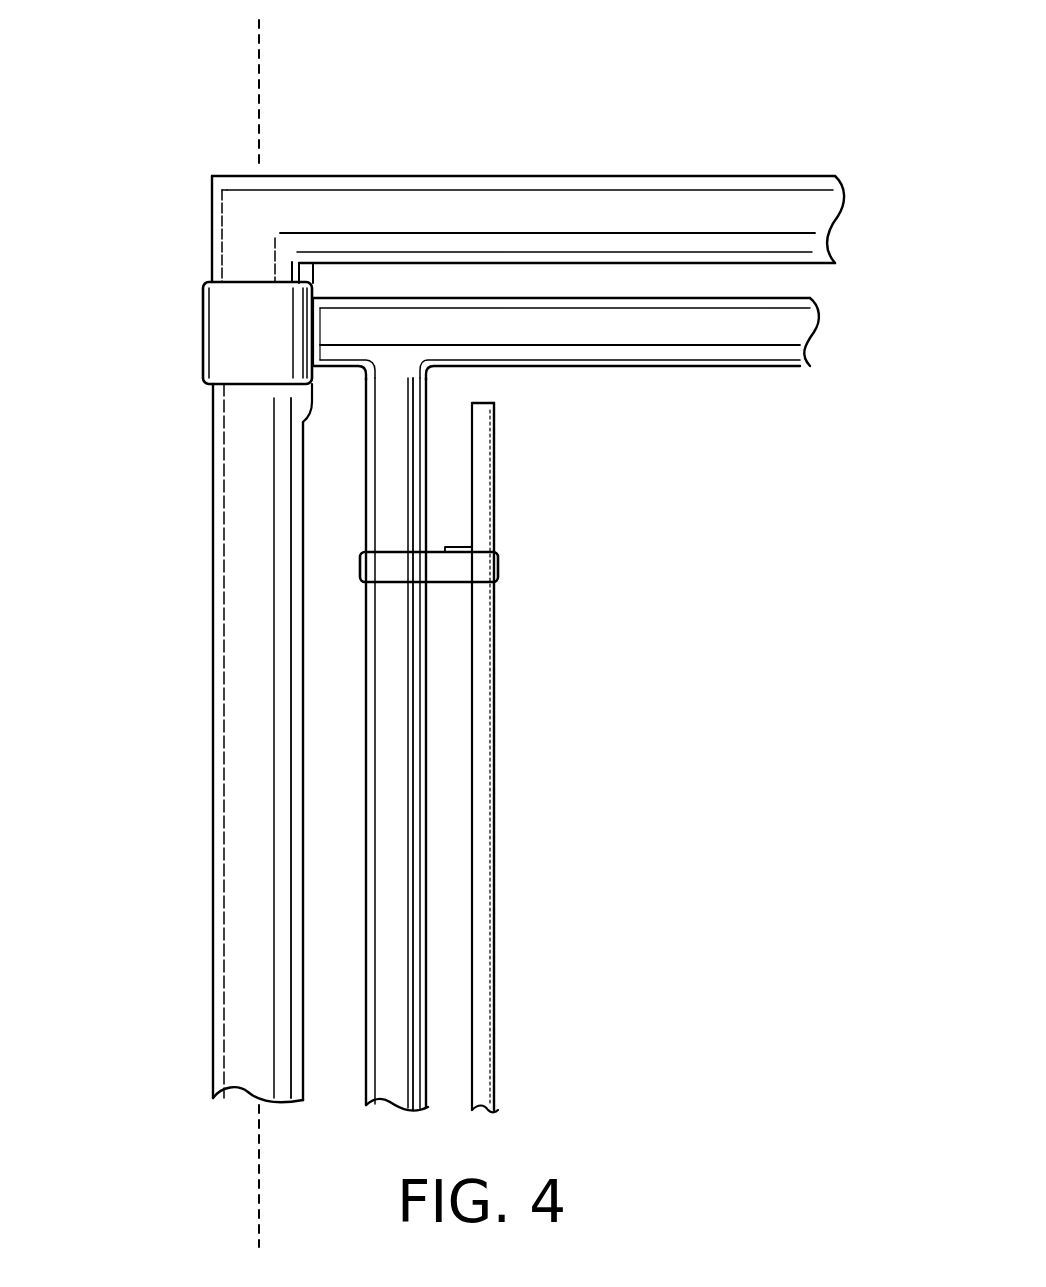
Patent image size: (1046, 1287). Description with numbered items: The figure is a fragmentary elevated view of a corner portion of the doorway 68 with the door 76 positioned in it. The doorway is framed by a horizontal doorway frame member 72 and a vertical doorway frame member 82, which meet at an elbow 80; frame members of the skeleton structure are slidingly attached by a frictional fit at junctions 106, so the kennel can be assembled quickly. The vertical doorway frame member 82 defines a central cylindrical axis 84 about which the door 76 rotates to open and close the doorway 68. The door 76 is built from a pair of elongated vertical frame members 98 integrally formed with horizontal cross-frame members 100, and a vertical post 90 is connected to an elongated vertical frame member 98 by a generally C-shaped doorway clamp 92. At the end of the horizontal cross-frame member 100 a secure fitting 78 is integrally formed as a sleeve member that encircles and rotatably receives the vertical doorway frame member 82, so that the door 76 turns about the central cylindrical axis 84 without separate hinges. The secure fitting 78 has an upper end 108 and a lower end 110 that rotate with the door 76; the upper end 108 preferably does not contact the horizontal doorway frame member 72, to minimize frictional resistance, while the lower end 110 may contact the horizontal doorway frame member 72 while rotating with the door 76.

The doorway 68 is at (771, 98).
The horizontal doorway frame member 72 is at (517, 203).
The door 76 is at (702, 325).
The secure fitting 78 is at (218, 335).
The elbow 80 is at (233, 242).
The vertical doorway frame member 82 is at (236, 604).
The central cylindrical axis 84 is at (258, 43).
The vertical post 90 is at (485, 495).
The doorway clamp 92 is at (485, 572).
The elongated vertical frame member 98 is at (398, 852).
The horizontal cross-frame member 100 is at (565, 325).
The junction 106 is at (212, 203).
The upper end 108 is at (316, 282).
The lower end 110 is at (303, 420).